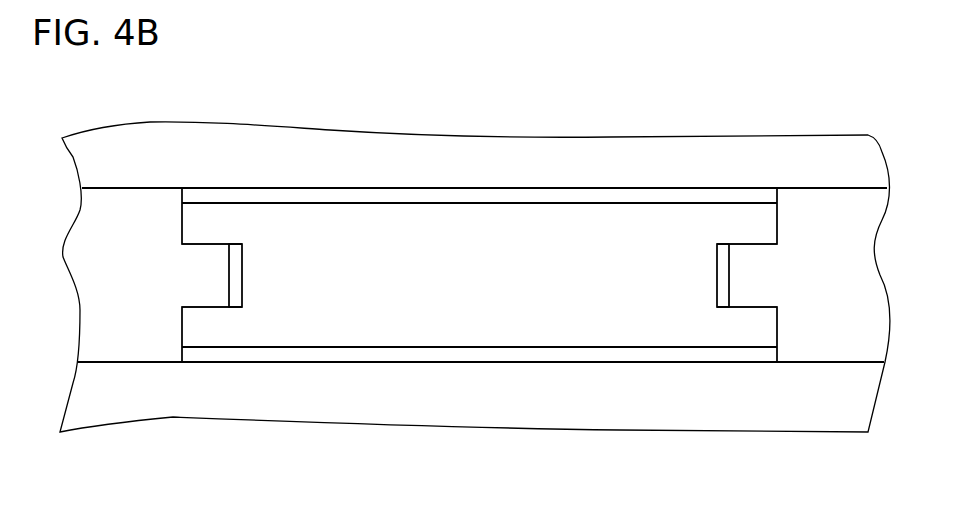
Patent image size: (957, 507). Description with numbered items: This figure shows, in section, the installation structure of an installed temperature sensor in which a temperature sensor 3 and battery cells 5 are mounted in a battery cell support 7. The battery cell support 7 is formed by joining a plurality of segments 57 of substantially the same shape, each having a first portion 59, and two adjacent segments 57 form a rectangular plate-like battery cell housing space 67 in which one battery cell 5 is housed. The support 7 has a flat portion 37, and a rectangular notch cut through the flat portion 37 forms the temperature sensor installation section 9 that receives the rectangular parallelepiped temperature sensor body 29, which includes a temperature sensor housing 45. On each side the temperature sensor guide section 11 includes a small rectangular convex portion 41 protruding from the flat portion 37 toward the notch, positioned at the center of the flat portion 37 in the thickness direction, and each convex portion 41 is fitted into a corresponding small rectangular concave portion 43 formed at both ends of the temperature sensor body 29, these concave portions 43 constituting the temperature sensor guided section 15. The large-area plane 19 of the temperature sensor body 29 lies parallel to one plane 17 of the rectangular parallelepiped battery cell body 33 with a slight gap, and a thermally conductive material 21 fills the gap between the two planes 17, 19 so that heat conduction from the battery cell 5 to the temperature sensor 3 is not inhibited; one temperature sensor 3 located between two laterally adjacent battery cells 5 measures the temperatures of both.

The measured object support 7 is at (98, 318).
The flat portion 37 is at (137, 123).
The installation section 9 is at (413, 218).
The temperature sensor body 29 is at (360, 218).
The thermally conductive material 21 is at (478, 193).
The planar outer surface 19 is at (503, 205).
The temperature sensor 3 is at (540, 228).
The measured object 5 is at (637, 172).
The first portion 59 is at (610, 147).
The segment 57 is at (713, 147).
The battery cell body 33 is at (772, 150).
The guide section 11 is at (213, 257).
The temperature sensor guided section 15 is at (479, 275).
The convex portion 41 is at (479, 216).
The concave portion 43 is at (479, 334).
The plane 17 is at (612, 188).
The battery cell housing space 67 is at (255, 333).
The temperature sensor housing 45 is at (289, 347).